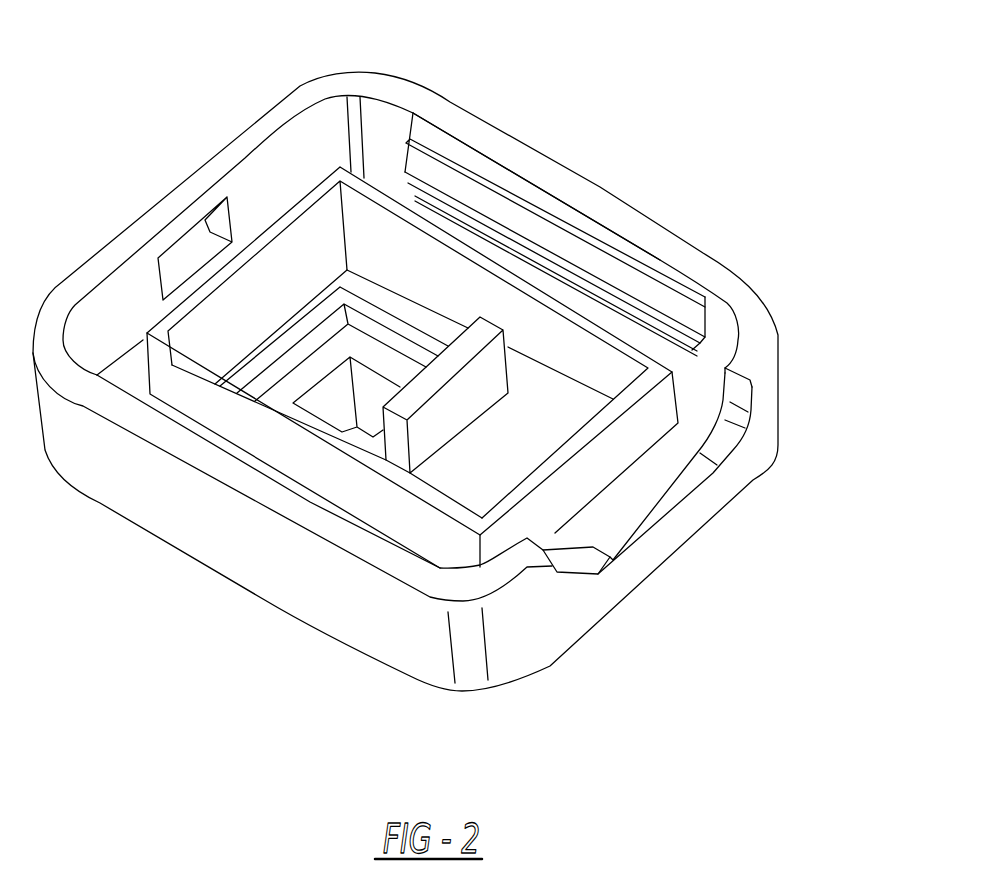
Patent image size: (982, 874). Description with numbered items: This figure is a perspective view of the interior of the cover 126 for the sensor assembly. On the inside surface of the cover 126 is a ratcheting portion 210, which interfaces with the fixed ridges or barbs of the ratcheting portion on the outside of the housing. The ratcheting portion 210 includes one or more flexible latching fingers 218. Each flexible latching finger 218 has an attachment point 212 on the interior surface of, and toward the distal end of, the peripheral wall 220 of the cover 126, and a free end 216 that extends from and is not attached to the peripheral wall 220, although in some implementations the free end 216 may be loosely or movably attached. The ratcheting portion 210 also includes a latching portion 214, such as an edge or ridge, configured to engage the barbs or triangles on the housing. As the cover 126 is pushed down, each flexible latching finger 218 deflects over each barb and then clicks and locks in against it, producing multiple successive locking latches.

The cover 126 is at (770, 397).
The ratcheting portion 210 is at (380, 133).
The attachment point 212 is at (695, 347).
The latching portion 214 is at (560, 248).
The free end 216 is at (685, 330).
The flexible latching finger 218 is at (528, 232).
The peripheral wall 220 is at (505, 150).